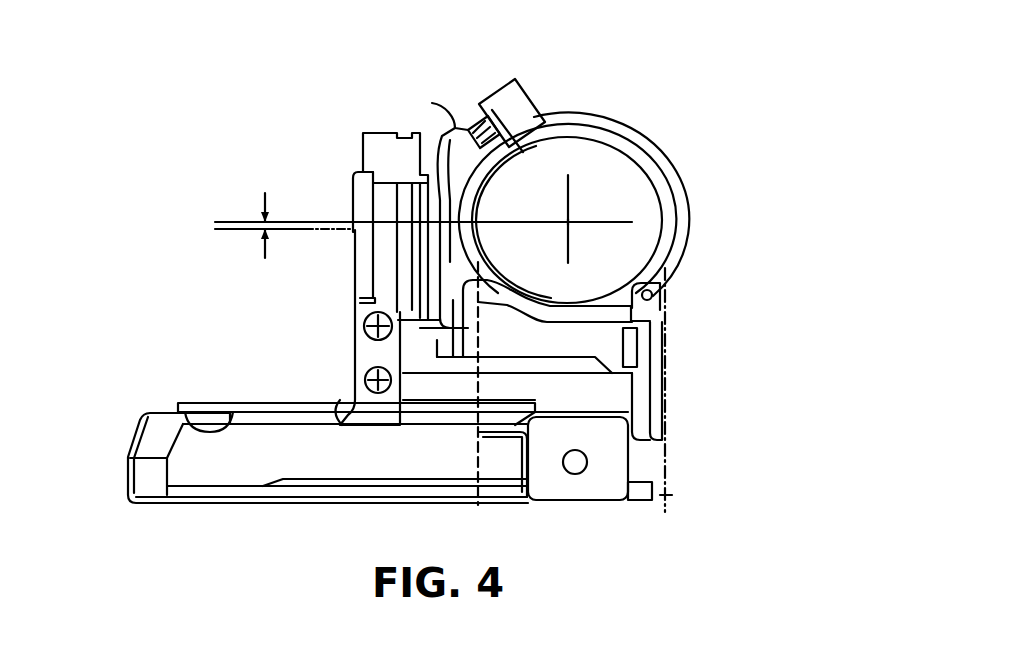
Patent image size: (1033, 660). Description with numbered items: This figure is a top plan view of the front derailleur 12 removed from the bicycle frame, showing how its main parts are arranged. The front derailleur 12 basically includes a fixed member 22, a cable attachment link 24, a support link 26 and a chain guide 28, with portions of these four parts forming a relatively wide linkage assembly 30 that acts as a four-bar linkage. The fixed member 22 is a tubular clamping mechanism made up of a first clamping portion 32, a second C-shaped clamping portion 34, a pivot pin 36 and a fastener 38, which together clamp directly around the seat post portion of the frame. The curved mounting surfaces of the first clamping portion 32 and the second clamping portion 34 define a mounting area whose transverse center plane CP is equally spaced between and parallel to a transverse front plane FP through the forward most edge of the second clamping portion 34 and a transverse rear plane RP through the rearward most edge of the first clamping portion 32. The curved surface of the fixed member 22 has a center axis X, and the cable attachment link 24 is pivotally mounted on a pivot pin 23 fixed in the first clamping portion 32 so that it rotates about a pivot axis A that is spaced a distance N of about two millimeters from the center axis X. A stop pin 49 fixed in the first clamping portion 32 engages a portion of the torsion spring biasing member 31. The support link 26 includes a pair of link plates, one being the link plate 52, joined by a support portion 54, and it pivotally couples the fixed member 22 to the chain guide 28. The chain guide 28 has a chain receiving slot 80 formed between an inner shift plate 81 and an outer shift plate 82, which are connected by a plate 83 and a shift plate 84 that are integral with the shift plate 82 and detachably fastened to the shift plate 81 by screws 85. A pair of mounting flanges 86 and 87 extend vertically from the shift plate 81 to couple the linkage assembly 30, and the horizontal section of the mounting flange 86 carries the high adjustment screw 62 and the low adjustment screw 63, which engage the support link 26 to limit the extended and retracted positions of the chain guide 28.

The front derailleur 12 is at (618, 92).
The fixed member 22 is at (676, 308).
The pivot pin 23 is at (348, 217).
The cable attachment link 24 is at (361, 163).
The support link 26 is at (623, 392).
The chain guide 28 is at (657, 457).
The linkage assembly 30 is at (340, 338).
The biasing member 31 is at (455, 265).
The first clamping portion 32 is at (447, 127).
The second C-shaped clamping portion 34 is at (672, 166).
The pivot pin 36 is at (656, 282).
The fastener 38 is at (505, 92).
The stop pin 49 is at (474, 313).
The link plate 52 is at (640, 350).
The support portion 54 is at (540, 382).
The high adjustment screw 62 is at (364, 320).
The low adjustment screw 63 is at (353, 372).
The chain receiving slot 80 is at (215, 465).
The shift plate 81 is at (247, 402).
The shift plate 82 is at (288, 508).
The plate 83 is at (610, 483).
The shift plate 84 is at (127, 475).
The screw 85 is at (207, 436).
The mounting flange 86 is at (338, 426).
The mounting flange 87 is at (663, 410).
The pivot axis A is at (243, 228).
The distance N is at (265, 253).
The center axis X is at (568, 220).
The transverse center plane CP is at (568, 247).
The transverse rear plane RP is at (478, 460).
The transverse front plane FP is at (667, 493).